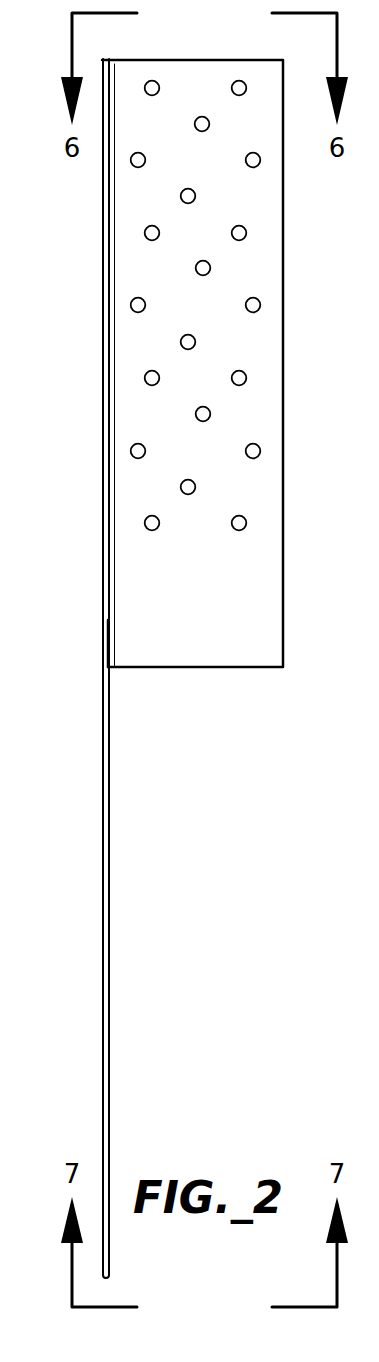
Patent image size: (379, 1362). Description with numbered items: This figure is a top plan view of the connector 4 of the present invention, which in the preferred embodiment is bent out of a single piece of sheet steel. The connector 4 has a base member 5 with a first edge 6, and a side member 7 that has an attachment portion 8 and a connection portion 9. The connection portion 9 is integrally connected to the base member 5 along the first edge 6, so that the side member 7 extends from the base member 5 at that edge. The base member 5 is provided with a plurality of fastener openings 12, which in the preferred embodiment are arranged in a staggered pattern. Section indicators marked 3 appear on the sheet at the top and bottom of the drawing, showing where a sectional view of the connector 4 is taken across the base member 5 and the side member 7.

The section line 3- 3 is at (307, 98).
The connector 4 is at (252, 696).
The base member 5 is at (283, 592).
The first edge 6 is at (108, 644).
The side member 7 is at (100, 710).
The attachment portion 8 is at (109, 1040).
The connection portion 9 is at (103, 358).
The fastener openings 12 is at (195, 196).